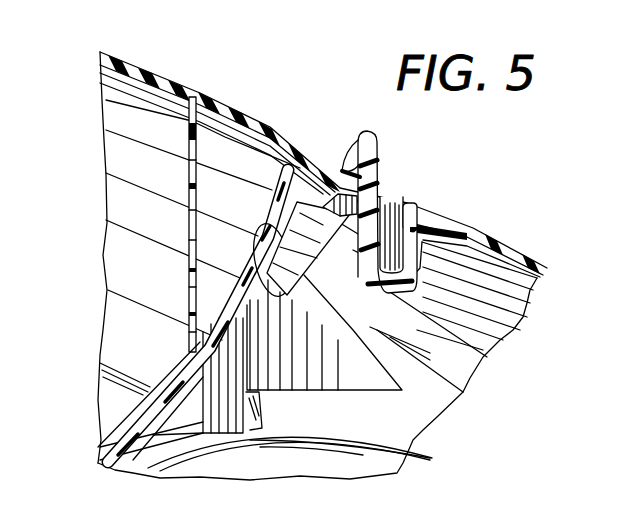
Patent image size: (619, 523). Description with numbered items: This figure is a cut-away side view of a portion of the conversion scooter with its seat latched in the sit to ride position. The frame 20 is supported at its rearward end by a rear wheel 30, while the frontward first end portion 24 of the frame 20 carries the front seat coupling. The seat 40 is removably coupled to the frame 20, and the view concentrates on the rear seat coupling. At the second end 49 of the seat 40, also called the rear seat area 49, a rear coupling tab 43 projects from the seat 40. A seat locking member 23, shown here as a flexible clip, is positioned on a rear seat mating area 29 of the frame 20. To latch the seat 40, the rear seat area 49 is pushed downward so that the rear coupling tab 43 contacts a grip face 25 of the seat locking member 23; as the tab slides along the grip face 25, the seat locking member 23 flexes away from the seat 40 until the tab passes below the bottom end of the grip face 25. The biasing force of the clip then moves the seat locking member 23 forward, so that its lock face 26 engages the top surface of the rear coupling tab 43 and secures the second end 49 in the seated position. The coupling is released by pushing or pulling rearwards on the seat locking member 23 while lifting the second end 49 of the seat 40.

The frame 20 is at (287, 408).
The seat locking member 23 is at (378, 143).
The first end portion of the frame 24 is at (413, 402).
The grip face 25 is at (350, 146).
The lock face 26 is at (377, 190).
The rear seat mating area 29 is at (312, 287).
The rear wheel 30 is at (225, 463).
The seat 40 is at (135, 105).
The rear coupling tab 43 is at (291, 172).
The second end of the seat 49 is at (228, 140).